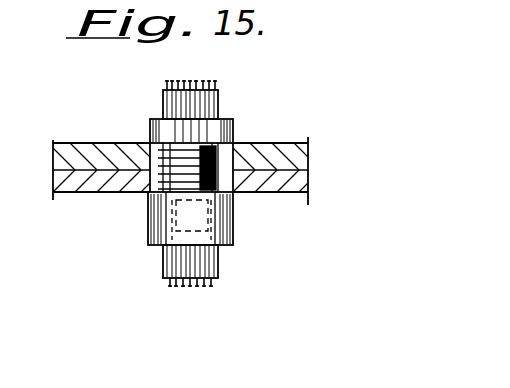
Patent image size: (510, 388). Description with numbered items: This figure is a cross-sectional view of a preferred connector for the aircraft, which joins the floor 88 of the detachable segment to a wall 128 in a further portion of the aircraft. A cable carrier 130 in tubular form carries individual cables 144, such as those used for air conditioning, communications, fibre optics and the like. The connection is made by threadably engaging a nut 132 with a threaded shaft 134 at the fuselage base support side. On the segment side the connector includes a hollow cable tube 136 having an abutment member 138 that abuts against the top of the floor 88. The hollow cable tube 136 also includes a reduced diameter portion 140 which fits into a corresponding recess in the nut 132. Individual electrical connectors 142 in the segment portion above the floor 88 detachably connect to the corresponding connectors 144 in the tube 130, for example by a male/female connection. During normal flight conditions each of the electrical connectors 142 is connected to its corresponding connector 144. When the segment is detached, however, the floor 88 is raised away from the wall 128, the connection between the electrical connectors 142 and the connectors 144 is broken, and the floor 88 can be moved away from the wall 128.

The floor 88 is at (292, 163).
The wall 128 is at (275, 187).
The threaded shaft 134 is at (130, 125).
The hollow cable tube 136 is at (200, 106).
The abutment member 138 is at (222, 130).
The reduced diameter portion 140 is at (178, 208).
The nut 132 is at (172, 238).
The cable carrier 130 is at (176, 263).
The individual electrical connectors 142 is at (196, 84).
The individual cables 144 is at (208, 287).